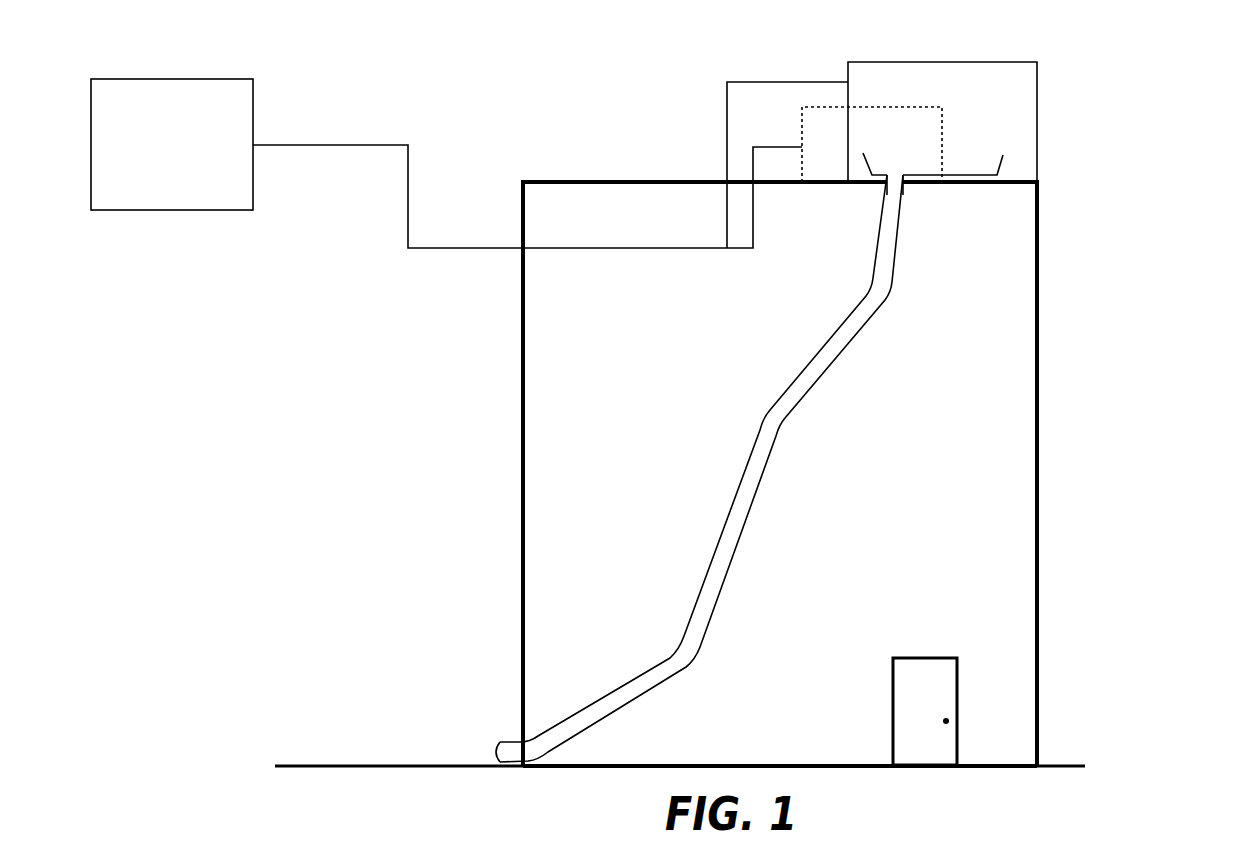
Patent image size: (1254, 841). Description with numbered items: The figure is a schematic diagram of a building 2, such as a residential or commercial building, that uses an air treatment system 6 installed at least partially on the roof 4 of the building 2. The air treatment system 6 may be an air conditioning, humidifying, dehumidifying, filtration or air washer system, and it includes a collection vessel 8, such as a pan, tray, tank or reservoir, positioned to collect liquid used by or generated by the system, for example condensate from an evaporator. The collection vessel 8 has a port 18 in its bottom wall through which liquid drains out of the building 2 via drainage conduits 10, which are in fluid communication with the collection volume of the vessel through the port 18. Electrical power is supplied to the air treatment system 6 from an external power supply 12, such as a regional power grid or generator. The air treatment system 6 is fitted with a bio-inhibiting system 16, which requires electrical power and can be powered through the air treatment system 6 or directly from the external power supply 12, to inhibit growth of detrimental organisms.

The building 2 is at (1038, 478).
The roof 4 is at (639, 180).
The air treatment system 6 is at (1013, 62).
The collection vessel 8 is at (1003, 165).
The drainage conduits 10 is at (798, 403).
The external power supply 12 is at (193, 80).
The bio-inhibiting system 16 is at (900, 103).
The port 18 is at (893, 178).